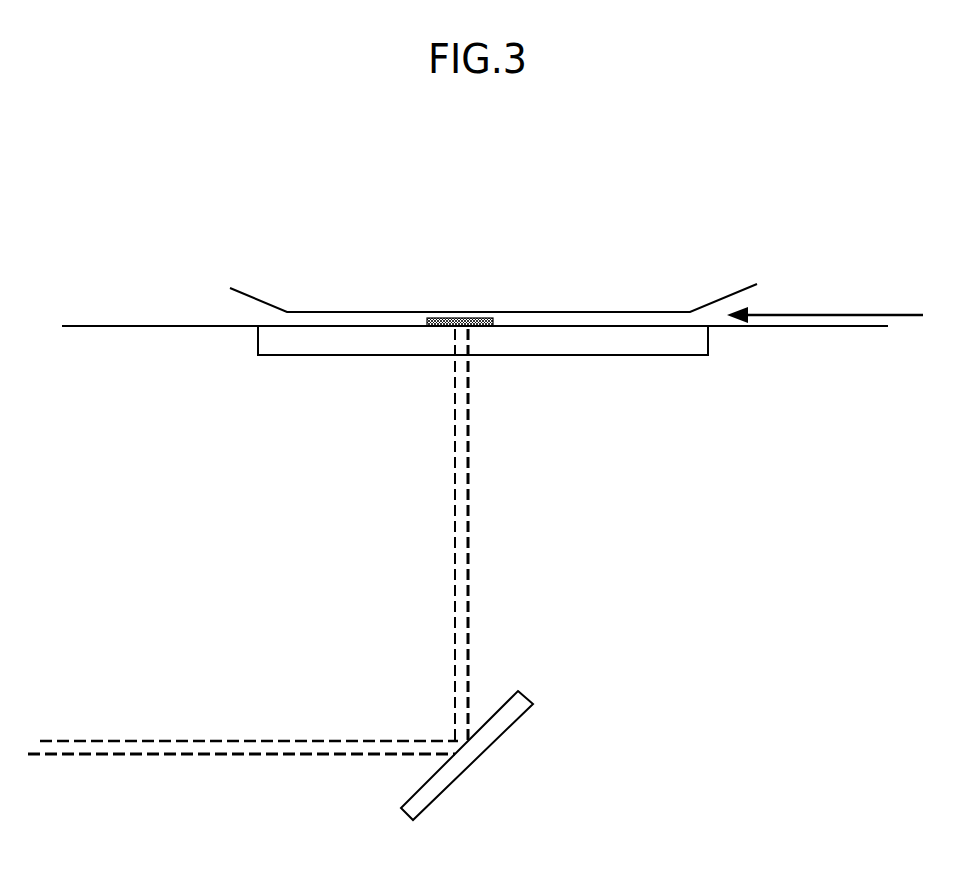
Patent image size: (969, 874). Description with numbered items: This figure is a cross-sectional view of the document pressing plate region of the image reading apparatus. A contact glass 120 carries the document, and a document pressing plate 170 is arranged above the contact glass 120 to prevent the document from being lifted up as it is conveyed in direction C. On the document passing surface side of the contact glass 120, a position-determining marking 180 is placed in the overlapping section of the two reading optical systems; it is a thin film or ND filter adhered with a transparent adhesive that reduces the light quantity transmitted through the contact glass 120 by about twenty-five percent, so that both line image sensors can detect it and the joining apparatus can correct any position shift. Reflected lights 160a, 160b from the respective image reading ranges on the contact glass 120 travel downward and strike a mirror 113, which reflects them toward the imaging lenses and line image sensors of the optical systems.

The mirror 113 is at (480, 758).
The contact glass 120 is at (290, 345).
The reflected light 160a is at (470, 493).
The reflected light 160b is at (455, 598).
The document pressing plate 170 is at (242, 292).
The position-determining marking 180 is at (483, 323).
The document conveyance direction C is at (825, 301).